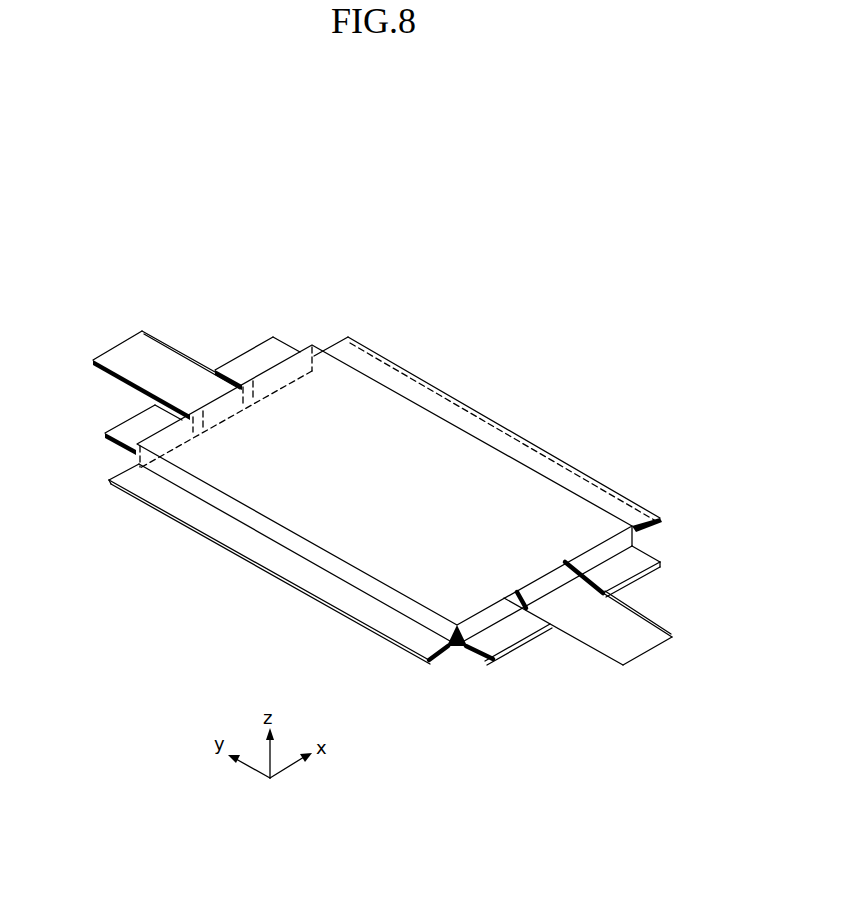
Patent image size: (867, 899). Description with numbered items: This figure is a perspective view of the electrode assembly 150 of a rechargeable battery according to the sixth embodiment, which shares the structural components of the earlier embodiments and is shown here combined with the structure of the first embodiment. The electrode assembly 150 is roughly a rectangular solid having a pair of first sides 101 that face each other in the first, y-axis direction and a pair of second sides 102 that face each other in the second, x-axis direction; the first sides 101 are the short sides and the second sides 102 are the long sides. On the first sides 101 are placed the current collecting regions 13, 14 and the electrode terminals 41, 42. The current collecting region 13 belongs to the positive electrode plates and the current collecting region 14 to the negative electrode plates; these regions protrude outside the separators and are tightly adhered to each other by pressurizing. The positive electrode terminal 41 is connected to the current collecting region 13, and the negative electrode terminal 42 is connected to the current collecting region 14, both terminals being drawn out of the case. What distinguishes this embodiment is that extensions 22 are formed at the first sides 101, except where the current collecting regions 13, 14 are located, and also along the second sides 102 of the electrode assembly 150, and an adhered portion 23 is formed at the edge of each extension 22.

The electrode assembly 150 is at (426, 358).
The first sides 101 is at (254, 358).
The second sides 102 is at (486, 414).
The current collecting region 13 is at (197, 432).
The current collecting region 14 is at (547, 583).
The extension 22 is at (655, 526).
The adhered portion 23 is at (596, 495).
The positive electrode terminal 41 is at (128, 345).
The negative electrode terminal 42 is at (632, 640).